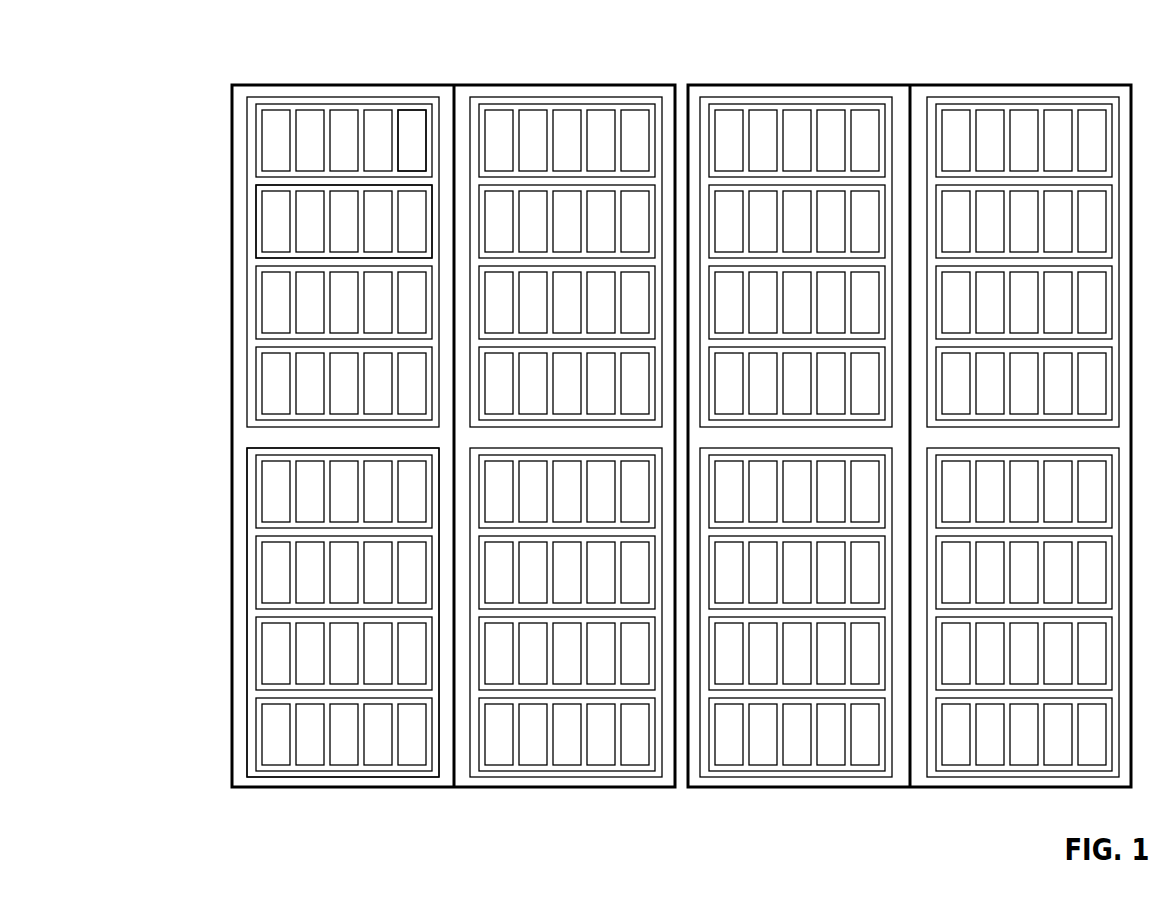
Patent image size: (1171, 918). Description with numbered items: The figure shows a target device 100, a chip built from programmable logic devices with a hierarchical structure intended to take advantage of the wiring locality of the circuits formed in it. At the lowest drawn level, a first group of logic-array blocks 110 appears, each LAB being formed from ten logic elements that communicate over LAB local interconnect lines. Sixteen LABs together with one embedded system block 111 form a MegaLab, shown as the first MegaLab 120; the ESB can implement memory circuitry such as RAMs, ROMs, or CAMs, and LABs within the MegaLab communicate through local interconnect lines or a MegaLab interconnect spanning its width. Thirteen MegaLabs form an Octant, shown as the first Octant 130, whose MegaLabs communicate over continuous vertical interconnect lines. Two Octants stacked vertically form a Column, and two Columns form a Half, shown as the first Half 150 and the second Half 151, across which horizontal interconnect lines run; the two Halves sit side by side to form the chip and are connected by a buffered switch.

The target device 100 is at (160, 81).
The first group of logic-array blocks 110 is at (448, 80).
The embedded system block 111 is at (415, 108).
The first MegaLab 120 is at (220, 190).
The first Octant 130 is at (220, 778).
The first Half 150 is at (244, 44).
The second Half 151 is at (1120, 43).